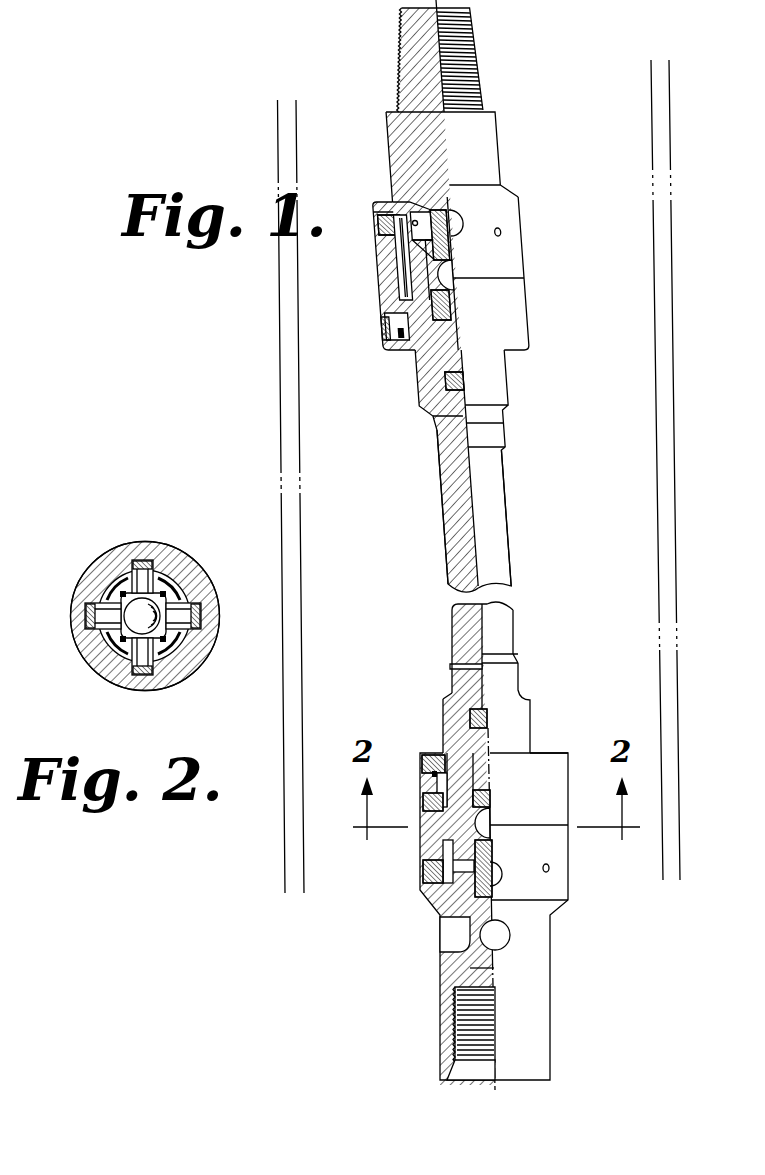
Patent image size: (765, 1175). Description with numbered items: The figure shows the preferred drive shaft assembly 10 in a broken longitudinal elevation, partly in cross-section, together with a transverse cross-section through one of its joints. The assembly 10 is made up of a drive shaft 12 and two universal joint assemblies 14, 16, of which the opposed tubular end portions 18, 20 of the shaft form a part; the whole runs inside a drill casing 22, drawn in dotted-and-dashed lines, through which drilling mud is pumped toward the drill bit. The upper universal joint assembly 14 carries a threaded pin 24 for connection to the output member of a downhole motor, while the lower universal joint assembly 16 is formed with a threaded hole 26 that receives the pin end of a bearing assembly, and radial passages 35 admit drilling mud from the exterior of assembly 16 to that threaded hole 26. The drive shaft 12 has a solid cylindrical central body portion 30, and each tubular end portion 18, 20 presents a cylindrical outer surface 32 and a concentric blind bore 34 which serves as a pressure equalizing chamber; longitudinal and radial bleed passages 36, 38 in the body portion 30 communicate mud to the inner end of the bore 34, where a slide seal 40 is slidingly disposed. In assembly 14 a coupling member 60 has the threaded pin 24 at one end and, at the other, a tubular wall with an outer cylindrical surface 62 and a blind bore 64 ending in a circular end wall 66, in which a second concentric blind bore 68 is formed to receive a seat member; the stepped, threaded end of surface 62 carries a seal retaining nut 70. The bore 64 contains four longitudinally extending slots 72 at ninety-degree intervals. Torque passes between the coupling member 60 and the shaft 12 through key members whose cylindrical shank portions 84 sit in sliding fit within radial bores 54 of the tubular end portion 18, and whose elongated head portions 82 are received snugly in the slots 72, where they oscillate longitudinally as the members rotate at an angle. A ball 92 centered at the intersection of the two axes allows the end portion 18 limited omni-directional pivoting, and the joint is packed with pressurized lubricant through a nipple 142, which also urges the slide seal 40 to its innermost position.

In FIG. 1, the drive shaft assembly 10 is at (314, 388).
In FIG. 1, the drive shaft 12 is at (440, 561).
In FIG. 1, the universal joint assembly 14 is at (560, 119).
In FIG. 1, the universal joint assembly 16 is at (386, 906).
In FIG. 1, the tubular end portion 18 is at (513, 734).
In FIG. 2, the tubular end portion 18 is at (88, 653).
In FIG. 1, the tubular end portion 20 is at (533, 703).
In FIG. 1, the drill casing 22 is at (658, 548).
In FIG. 1, the threaded pin 24 is at (468, 60).
In FIG. 1, the threaded hole 26 is at (457, 1043).
In FIG. 1, the central body portion 30 is at (522, 519).
In FIG. 1, the cylindrical outer surface 32 is at (458, 395).
In FIG. 1, the blind bore 34 is at (406, 523).
In FIG. 2, the blind bore 34 is at (104, 680).
In FIG. 1, the radial passages 35 is at (457, 943).
In FIG. 1, the longitudinal bleed passage 36 is at (520, 547).
In FIG. 1, the radial bleed passage 38 is at (422, 557).
In FIG. 1, the slide seal 40 is at (485, 549).
In FIG. 2, the radial bore 54 is at (110, 585).
In FIG. 1, the coupling member 60 is at (439, 355).
In FIG. 2, the coupling member 60 is at (162, 543).
In FIG. 1, the outer cylindrical surface 62 is at (481, 184).
In FIG. 1, the blind bore 64 is at (360, 217).
In FIG. 2, the blind bore 64 is at (170, 580).
In FIG. 1, the circular end wall 66 is at (379, 193).
In FIG. 1, the second concentric blind bore 68 is at (365, 183).
In FIG. 1, the seal retaining nut 70 is at (382, 275).
In FIG. 1, the longitudinally extending slots 72 is at (370, 257).
In FIG. 2, the longitudinally extending slots 72 is at (95, 613).
In FIG. 2, the head portion 82 is at (137, 560).
In FIG. 2, the shank portion 84 is at (196, 591).
In FIG. 1, the ball 92 is at (463, 549).
In FIG. 2, the ball 92 is at (128, 607).
In FIG. 1, the nipple 142 is at (561, 540).